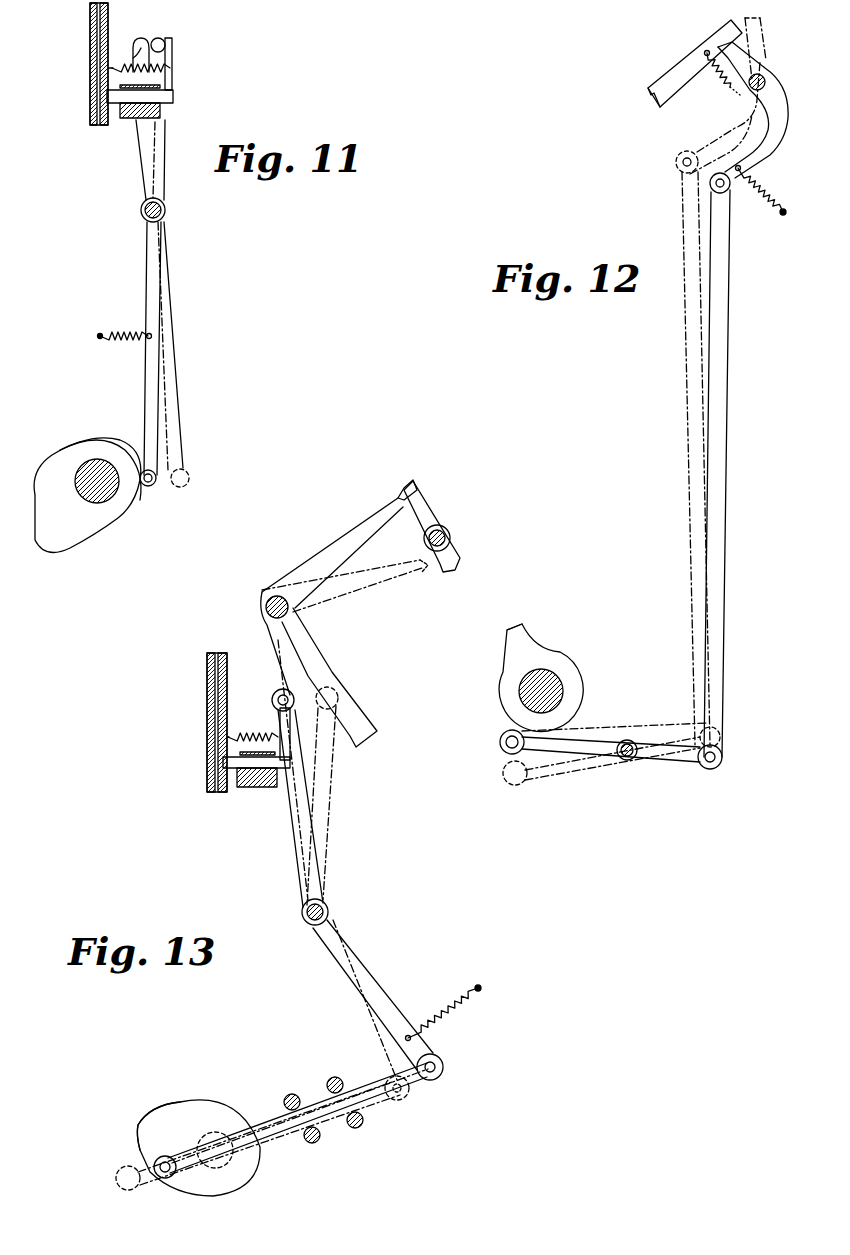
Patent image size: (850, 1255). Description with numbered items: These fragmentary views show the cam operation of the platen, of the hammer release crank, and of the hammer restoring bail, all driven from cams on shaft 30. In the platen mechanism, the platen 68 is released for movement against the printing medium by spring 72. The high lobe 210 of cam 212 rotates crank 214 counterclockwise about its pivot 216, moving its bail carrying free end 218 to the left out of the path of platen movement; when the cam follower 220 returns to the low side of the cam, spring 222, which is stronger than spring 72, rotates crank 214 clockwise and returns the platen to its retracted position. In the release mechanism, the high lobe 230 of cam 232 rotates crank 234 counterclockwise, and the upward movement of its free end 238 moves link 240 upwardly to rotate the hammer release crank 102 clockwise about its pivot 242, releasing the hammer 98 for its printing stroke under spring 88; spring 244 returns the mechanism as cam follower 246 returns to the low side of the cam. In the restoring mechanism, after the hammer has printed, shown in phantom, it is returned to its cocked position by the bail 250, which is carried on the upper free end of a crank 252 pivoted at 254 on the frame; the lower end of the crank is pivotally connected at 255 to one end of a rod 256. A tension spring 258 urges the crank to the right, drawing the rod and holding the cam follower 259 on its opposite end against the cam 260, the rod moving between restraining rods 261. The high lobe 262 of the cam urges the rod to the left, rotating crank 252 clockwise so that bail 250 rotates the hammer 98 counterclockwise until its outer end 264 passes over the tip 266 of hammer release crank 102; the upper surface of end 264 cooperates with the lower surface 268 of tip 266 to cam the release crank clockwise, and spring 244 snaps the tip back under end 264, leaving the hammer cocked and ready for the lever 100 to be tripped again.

In FIG. 11, the drive shaft 30 is at (88, 480).
In FIG. 12, the drive shaft 30 is at (534, 694).
In FIG. 11, the platen 68 is at (172, 96).
In FIG. 11, the spring 72 is at (126, 65).
In FIG. 12, the spring 88 is at (722, 80).
In FIG. 12, the hammer 98 is at (678, 75).
In FIG. 13, the lever arm 100 is at (360, 745).
In FIG. 12, the hammer release crank 102 is at (742, 50).
In FIG. 11, the high lobe 210 is at (44, 540).
In FIG. 11, the cam 212 is at (122, 512).
In FIG. 11, the crank 214 is at (147, 365).
In FIG. 11, the pivot 216 is at (141, 210).
In FIG. 11, the bail carrying free end 218 is at (161, 38).
In FIG. 11, the cam follower 220 is at (156, 484).
In FIG. 11, the spring 222 is at (104, 331).
In FIG. 12, the high lobe 230 is at (522, 626).
In FIG. 12, the cam 232 is at (566, 668).
In FIG. 12, the crank 234 is at (598, 738).
In FIG. 12, the free end 238 is at (632, 760).
In FIG. 12, the link 240 is at (725, 306).
In FIG. 12, the pivot 242 is at (750, 92).
In FIG. 12, the spring 244 is at (764, 205).
In FIG. 12, the cam follower 246 is at (500, 743).
In FIG. 13, the bail 250 is at (275, 695).
In FIG. 13, the crank 252 is at (303, 840).
In FIG. 13, the pivot 254 is at (330, 912).
In FIG. 13, the pivotal connection 255 is at (445, 1066).
In FIG. 13, the rod 256 is at (425, 1082).
In FIG. 13, the tension spring 258 is at (447, 1000).
In FIG. 13, the cam follower 259 is at (155, 1160).
In FIG. 13, the cam 260 is at (248, 1172).
In FIG. 13, the restraining rods 261 is at (327, 1083).
In FIG. 13, the high lobe 262 is at (140, 1120).
In FIG. 13, the outer end 264 is at (396, 497).
In FIG. 13, the tip 266 is at (410, 493).
In FIG. 13, the lower surface 268 is at (416, 510).